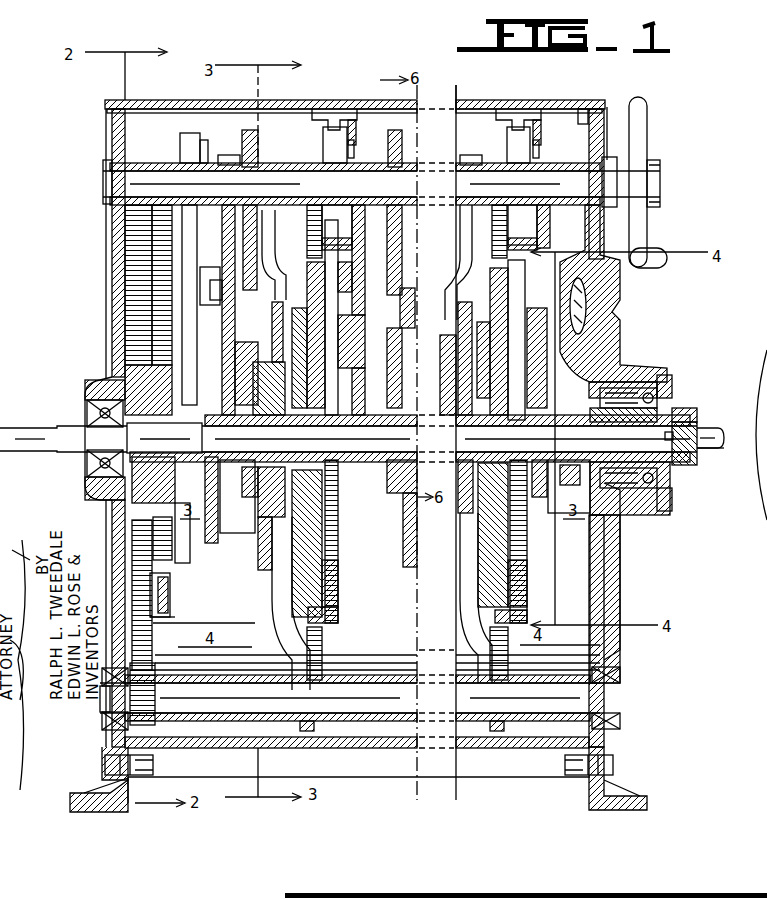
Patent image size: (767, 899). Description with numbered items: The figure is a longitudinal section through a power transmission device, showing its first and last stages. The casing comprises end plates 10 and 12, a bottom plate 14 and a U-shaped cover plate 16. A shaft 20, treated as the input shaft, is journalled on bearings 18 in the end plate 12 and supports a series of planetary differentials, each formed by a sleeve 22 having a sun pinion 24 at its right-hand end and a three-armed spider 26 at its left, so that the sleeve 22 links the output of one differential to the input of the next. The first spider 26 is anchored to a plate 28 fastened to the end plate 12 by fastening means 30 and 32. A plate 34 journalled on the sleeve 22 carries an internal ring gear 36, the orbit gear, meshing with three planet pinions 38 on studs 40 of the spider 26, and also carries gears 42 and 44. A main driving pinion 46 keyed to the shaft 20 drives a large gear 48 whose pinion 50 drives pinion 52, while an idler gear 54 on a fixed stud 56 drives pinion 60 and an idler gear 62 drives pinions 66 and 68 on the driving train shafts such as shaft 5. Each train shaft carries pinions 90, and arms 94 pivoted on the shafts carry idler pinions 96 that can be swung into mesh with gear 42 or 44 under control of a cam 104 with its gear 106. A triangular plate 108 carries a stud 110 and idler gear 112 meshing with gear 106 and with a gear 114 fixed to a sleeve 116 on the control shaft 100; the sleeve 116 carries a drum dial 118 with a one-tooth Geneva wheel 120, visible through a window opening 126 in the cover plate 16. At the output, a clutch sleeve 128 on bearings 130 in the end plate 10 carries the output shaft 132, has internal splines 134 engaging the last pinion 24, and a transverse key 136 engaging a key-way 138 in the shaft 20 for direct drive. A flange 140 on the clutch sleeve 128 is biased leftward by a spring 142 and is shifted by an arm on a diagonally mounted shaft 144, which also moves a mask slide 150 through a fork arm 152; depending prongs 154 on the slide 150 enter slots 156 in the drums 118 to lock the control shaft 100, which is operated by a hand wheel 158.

The driving train shaft 5 is at (212, 704).
The end plate 10 is at (607, 581).
The end plate 12 is at (112, 518).
The bottom plate 14 is at (332, 744).
The U-shaped cover plate 16 is at (165, 100).
The bearings 18 is at (102, 405).
The shaft 20 is at (66, 428).
The sleeve 22 is at (428, 414).
The pinion 24 is at (355, 410).
The three-armed spider 26 is at (540, 288).
The plate 28 is at (183, 350).
The fastening means 30 is at (211, 275).
The fastening means 32 is at (203, 138).
The plate 34 is at (328, 270).
The internal ring gear 36 is at (336, 588).
The planet pinions 38 is at (335, 290).
The studs 40 is at (330, 312).
The gear 42 is at (338, 615).
The gear 44 is at (282, 578).
The main driving pinion 46 is at (165, 554).
The large gear 48 is at (135, 268).
The pinion 50 is at (150, 311).
The pinion 52 is at (140, 228).
The idler gear 54 is at (160, 608).
The fixed stud 56 is at (170, 601).
The pinion 60 is at (152, 719).
The idler gear 62 is at (165, 539).
The pinion 66 is at (160, 338).
The pinion 68 is at (165, 559).
The pinions 90 is at (305, 728).
The arms 94 is at (285, 281).
The idler pinion 96 is at (318, 238).
The control shaft 100 is at (112, 182).
The cam 104 is at (432, 374).
The gear 106 is at (430, 394).
The triangular plate 108 is at (255, 344).
The stud 110 is at (240, 309).
The idler gear 112 is at (253, 380).
The gear 114 is at (250, 130).
The sleeve 116 is at (262, 160).
The drum dial 118 is at (325, 150).
The one-tooth Geneva wheel 120 is at (355, 150).
The window opening 126 is at (312, 105).
The clutch sleeve 128 is at (676, 410).
The bearings 130 is at (648, 391).
The output shaft 132 is at (712, 448).
The internal splines 134 is at (695, 425).
The transverse key 136 is at (672, 468).
The key-way 138 is at (665, 436).
The flange 140 is at (569, 486).
The spring 142 is at (612, 500).
The diagonally mounted shaft 144 is at (604, 315).
The mask slide 150 is at (462, 105).
The fork arm 152 is at (585, 110).
The depending prongs 154 is at (335, 118).
The slots 156 is at (356, 122).
The hand wheel 158 is at (648, 128).